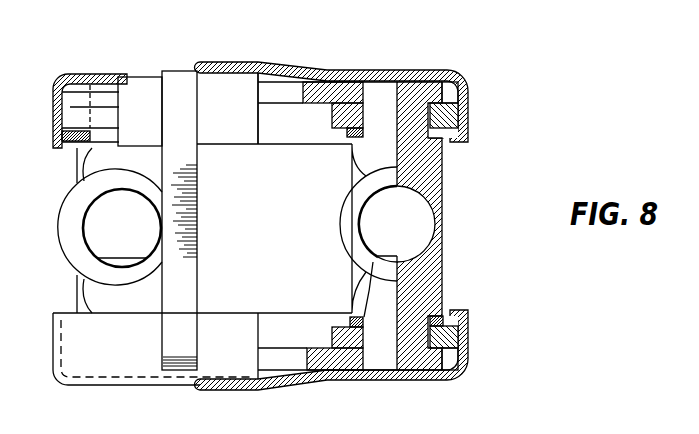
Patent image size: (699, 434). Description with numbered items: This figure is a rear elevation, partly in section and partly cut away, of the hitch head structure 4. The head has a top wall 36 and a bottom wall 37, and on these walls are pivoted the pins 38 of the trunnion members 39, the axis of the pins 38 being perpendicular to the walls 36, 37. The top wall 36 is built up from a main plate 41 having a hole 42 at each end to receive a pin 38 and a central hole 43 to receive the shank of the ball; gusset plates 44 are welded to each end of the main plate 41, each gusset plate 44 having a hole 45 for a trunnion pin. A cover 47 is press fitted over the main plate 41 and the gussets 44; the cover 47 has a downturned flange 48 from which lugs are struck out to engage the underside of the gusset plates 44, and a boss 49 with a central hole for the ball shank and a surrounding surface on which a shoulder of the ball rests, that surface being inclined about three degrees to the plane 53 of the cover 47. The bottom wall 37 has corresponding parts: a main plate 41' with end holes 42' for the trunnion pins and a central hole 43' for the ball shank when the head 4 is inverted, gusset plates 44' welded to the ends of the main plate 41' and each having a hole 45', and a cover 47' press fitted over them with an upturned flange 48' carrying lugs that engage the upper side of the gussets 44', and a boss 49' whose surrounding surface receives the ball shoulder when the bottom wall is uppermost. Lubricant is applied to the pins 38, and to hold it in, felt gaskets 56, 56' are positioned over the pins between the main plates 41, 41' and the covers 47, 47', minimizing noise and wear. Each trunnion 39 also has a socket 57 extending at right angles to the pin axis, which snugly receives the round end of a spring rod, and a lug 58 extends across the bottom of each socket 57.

The hitch head structure 4 is at (464, 211).
The top wall 36 is at (472, 107).
The bottom wall 37 is at (470, 366).
The pin 38 is at (368, 115).
The trunnion member 39 is at (444, 257).
The main plate 41 is at (333, 63).
The main plate 41' is at (339, 377).
The hole 42 is at (408, 196).
The hole 42' is at (430, 315).
The central hole 43 is at (316, 116).
The central hole 43' is at (319, 340).
The gusset plate 44 is at (460, 94).
The gusset plate 44' is at (466, 327).
The hole 45 is at (342, 149).
The hole 45' is at (342, 305).
The cover 47 is at (90, 94).
The cover 47' is at (151, 364).
The downturned flange 48 is at (475, 110).
The upturned flange 48' is at (475, 353).
The boss 49 is at (369, 96).
The boss 49' is at (455, 299).
The plane of cover 53 is at (134, 77).
The felt gasket 56 is at (321, 51).
The felt gasket 56' is at (321, 390).
The socket 57 is at (86, 237).
The lug 58 is at (132, 259).